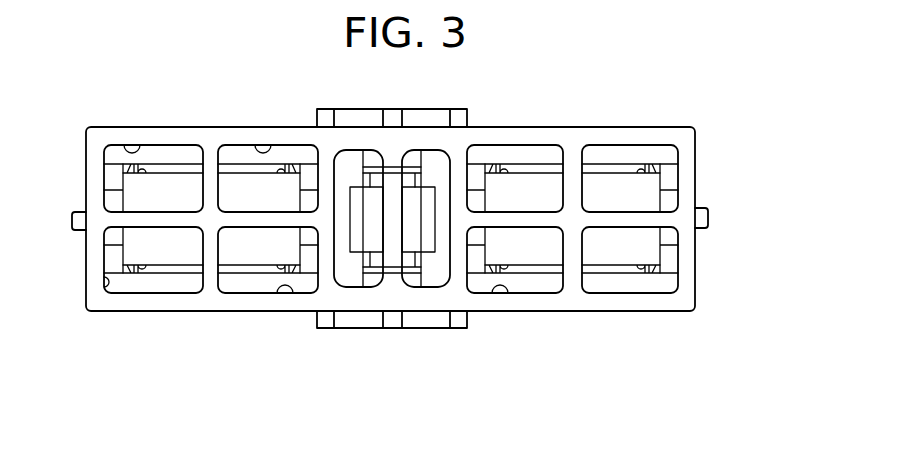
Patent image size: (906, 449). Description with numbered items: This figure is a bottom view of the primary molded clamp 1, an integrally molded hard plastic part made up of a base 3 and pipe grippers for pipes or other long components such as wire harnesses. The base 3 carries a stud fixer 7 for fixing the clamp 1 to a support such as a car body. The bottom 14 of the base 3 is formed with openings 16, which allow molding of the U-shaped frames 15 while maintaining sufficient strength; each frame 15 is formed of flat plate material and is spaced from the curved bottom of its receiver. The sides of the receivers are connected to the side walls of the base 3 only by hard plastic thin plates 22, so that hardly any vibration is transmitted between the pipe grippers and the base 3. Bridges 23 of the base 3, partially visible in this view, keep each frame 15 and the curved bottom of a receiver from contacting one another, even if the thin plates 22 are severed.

The primary molded clamp 1 is at (398, 238).
The base 3 is at (257, 322).
The stud fixer 7 is at (328, 338).
The bottom 14 is at (210, 133).
The frame 15 is at (157, 252).
The openings 16 is at (127, 152).
The thin plates 22 is at (113, 200).
The bridges 23 is at (163, 168).